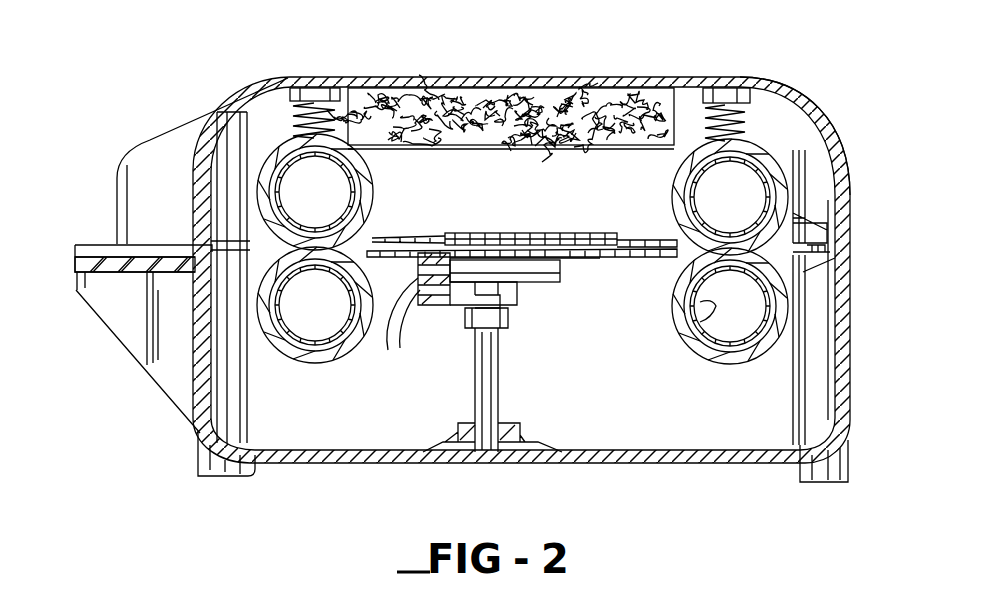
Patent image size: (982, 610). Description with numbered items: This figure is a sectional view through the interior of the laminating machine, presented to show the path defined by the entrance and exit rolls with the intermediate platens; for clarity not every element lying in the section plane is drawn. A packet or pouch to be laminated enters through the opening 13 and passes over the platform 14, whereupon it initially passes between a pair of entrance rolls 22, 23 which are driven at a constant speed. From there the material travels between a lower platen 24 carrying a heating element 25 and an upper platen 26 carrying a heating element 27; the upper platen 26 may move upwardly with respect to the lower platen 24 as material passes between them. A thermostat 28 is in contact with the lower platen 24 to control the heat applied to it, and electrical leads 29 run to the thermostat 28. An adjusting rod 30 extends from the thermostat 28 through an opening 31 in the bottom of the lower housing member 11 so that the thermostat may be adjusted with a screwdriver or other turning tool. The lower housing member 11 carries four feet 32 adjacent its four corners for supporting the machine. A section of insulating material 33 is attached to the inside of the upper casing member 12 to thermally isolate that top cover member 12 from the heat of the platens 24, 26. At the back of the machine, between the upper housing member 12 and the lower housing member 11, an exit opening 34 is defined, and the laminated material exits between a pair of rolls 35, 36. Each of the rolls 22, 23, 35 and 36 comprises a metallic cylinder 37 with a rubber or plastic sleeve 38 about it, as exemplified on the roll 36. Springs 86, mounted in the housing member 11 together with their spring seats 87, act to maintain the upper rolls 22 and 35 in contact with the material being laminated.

The lower housing member 11 is at (853, 392).
The upper casing member 12 is at (764, 82).
The opening 13 is at (105, 245).
The platform 14 is at (137, 253).
The entrance roll 22 is at (285, 97).
The entrance roll 23 is at (296, 345).
The lower platen 24 is at (649, 258).
The heating element 25 is at (590, 265).
The upper platen 26 is at (636, 240).
The heating element 27 is at (532, 237).
The thermostat 28 is at (522, 290).
The electrical leads 29 is at (405, 315).
The adjusting rod 30 is at (492, 391).
The opening 31 is at (522, 438).
The feet 32 is at (228, 470).
The insulating material 33 is at (522, 87).
The exit opening 34 is at (852, 250).
The roll 35 is at (735, 160).
The roll 36 is at (750, 366).
The metallic cylinder 37 is at (705, 343).
The sleeve 38 is at (687, 320).
The springs 86 is at (293, 135).
The spring seats 87 is at (310, 92).